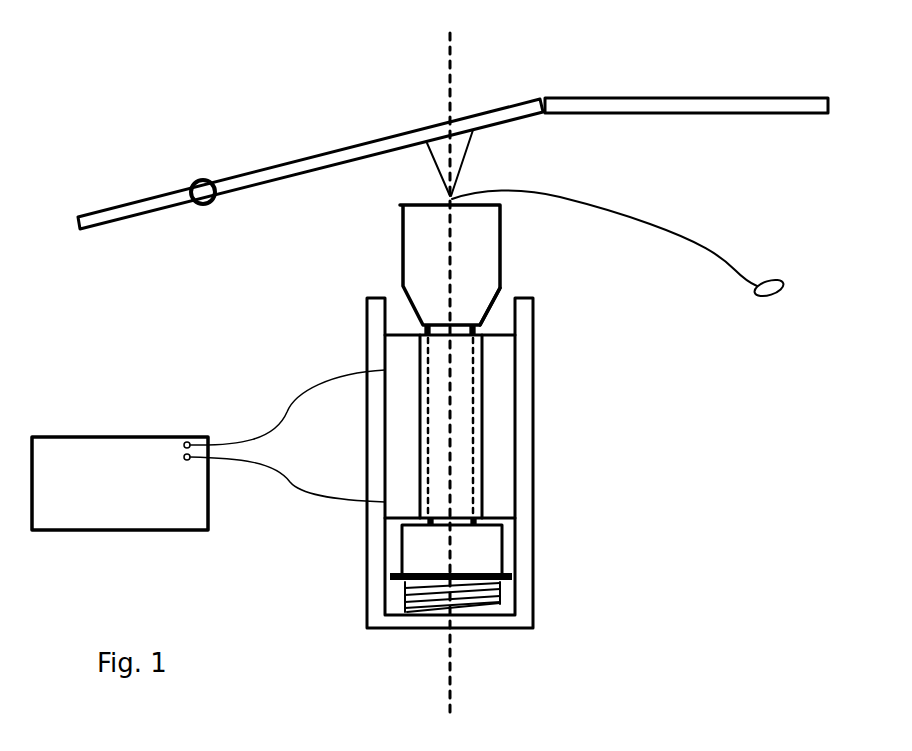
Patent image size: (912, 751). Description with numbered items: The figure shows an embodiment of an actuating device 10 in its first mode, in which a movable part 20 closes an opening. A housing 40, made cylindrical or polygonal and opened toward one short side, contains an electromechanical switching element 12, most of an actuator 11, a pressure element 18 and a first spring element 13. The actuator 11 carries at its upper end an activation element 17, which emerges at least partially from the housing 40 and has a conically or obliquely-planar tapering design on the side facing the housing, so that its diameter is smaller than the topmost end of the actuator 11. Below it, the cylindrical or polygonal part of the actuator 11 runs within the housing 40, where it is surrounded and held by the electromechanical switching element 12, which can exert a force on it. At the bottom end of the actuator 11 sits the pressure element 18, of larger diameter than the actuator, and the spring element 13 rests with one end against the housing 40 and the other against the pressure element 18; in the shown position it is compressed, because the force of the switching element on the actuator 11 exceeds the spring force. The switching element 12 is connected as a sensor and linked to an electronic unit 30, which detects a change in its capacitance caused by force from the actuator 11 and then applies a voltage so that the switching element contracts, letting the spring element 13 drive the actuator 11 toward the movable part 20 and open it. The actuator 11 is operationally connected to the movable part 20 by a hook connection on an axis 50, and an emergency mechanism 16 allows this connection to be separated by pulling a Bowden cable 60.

The actuating device 10 is at (637, 167).
The actuator 11 is at (381, 256).
The electromechanical switching element 12 is at (398, 352).
The first spring element 13 is at (498, 600).
The emergency mechanism 16 is at (455, 193).
The activation element 17 is at (498, 293).
The pressure element 18 is at (492, 562).
The movable part 20 is at (362, 145).
The electronic unit 30 is at (130, 498).
The housing 40 is at (522, 326).
The axis 50 is at (450, 361).
The Bowden cable 60 is at (637, 244).